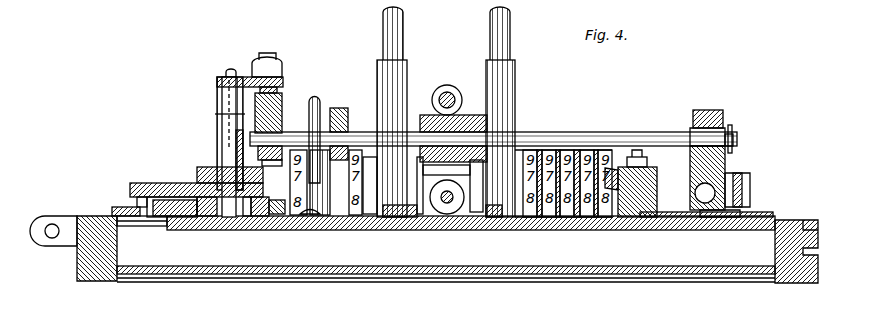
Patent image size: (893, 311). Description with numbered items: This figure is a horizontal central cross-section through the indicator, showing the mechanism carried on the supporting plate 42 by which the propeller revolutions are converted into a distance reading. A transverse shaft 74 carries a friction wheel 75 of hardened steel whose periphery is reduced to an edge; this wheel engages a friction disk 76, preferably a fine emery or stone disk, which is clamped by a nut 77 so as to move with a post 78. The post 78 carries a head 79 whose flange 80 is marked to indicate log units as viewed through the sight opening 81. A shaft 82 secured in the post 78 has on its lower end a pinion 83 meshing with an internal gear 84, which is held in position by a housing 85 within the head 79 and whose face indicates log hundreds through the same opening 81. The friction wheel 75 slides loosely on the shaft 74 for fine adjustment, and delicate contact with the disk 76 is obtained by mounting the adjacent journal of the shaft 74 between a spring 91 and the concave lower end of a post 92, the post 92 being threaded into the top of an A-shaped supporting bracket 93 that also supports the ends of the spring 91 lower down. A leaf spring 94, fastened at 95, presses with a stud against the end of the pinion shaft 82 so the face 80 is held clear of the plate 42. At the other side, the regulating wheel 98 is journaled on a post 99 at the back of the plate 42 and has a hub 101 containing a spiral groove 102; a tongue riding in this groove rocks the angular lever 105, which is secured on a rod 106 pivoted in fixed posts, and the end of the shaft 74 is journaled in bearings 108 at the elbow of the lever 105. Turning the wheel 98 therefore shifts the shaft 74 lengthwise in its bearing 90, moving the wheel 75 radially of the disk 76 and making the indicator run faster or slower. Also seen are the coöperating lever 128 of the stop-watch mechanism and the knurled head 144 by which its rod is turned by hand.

The carrying plate 42 is at (395, 232).
The knurled head 144 is at (505, 275).
The transverse shaft 74 is at (570, 137).
The friction wheel 75 is at (321, 112).
The friction disk 76 is at (132, 184).
The nut 77 is at (206, 176).
The post 78 is at (225, 125).
The head 79 is at (135, 191).
The flange 80 is at (145, 212).
The sight opening 81 is at (138, 227).
The shaft 82 is at (232, 158).
The pinion 83 is at (228, 216).
The internal gear 84 is at (263, 216).
The housing 85 is at (258, 205).
The bearing 90 is at (278, 128).
The spring 91 is at (282, 152).
The post 92 is at (284, 100).
The A-shaped supporting bracket 93 is at (252, 77).
The leaf spring 94 is at (245, 218).
The fastening point 95 is at (320, 226).
The regulating wheel 98 is at (768, 215).
The post 99 is at (652, 200).
The hub 101 is at (650, 197).
The spiral groove 102 is at (725, 172).
The angular lever 105 is at (727, 122).
The rod 106 is at (706, 212).
The bearings 108 is at (733, 150).
The coöperating lever 128 is at (422, 222).